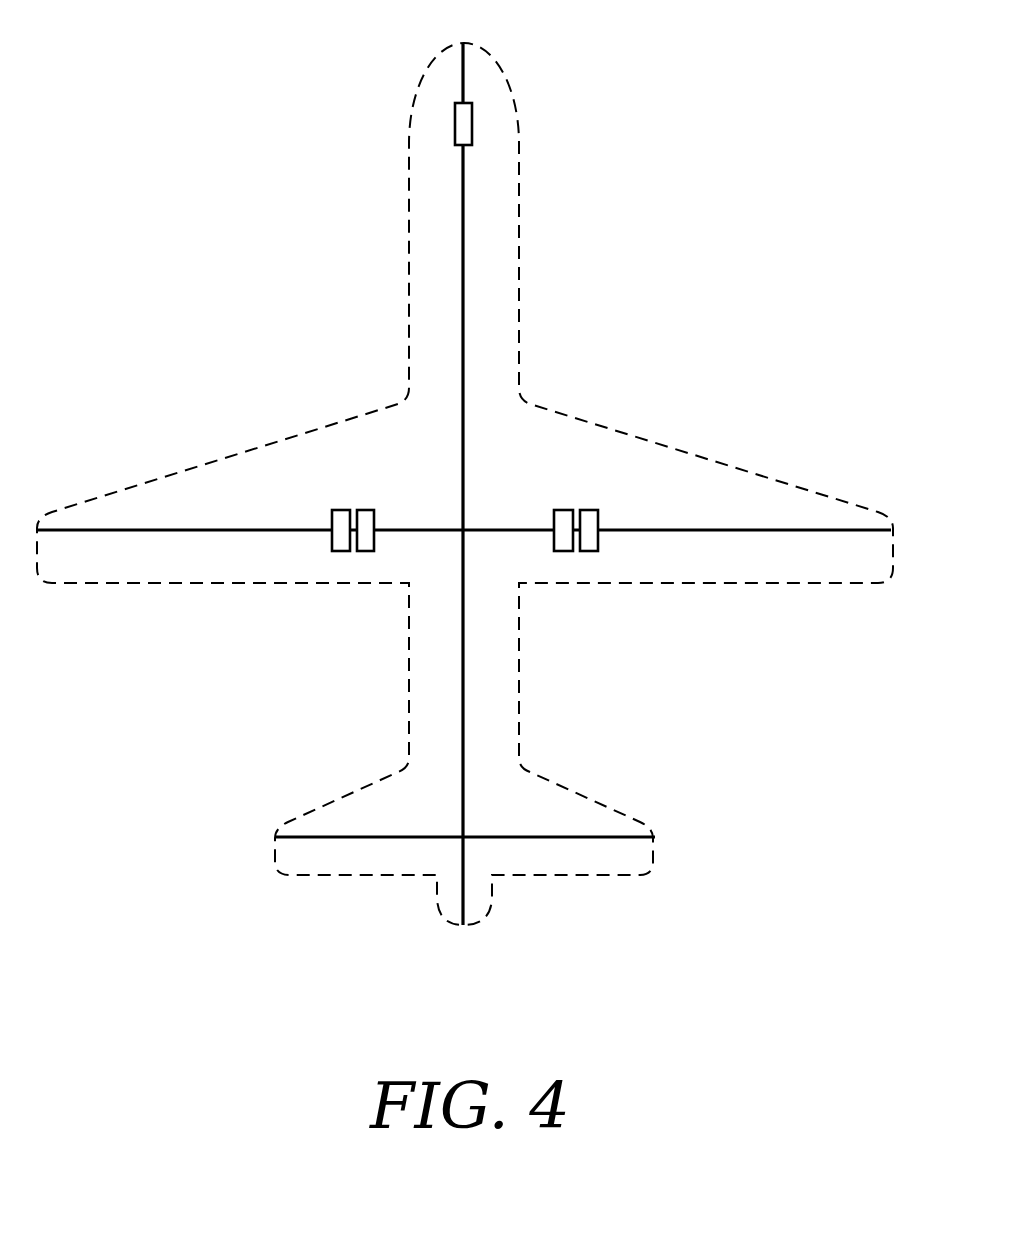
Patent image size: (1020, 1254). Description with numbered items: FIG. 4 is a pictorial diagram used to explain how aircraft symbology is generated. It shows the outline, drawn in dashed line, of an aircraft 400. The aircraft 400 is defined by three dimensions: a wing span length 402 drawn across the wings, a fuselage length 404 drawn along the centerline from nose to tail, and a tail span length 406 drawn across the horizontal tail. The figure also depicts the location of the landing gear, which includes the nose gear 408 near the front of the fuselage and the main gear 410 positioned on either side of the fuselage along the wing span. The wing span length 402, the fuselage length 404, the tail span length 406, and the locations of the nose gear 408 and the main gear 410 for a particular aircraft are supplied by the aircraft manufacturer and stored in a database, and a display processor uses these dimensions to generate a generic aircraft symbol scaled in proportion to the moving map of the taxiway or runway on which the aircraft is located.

The aircraft 400 is at (673, 450).
The wing span length 402 is at (255, 528).
The fuselage length 404 is at (466, 693).
The tail span length 406 is at (496, 835).
The nose gear 408 is at (473, 124).
The main gear 410 is at (341, 508).